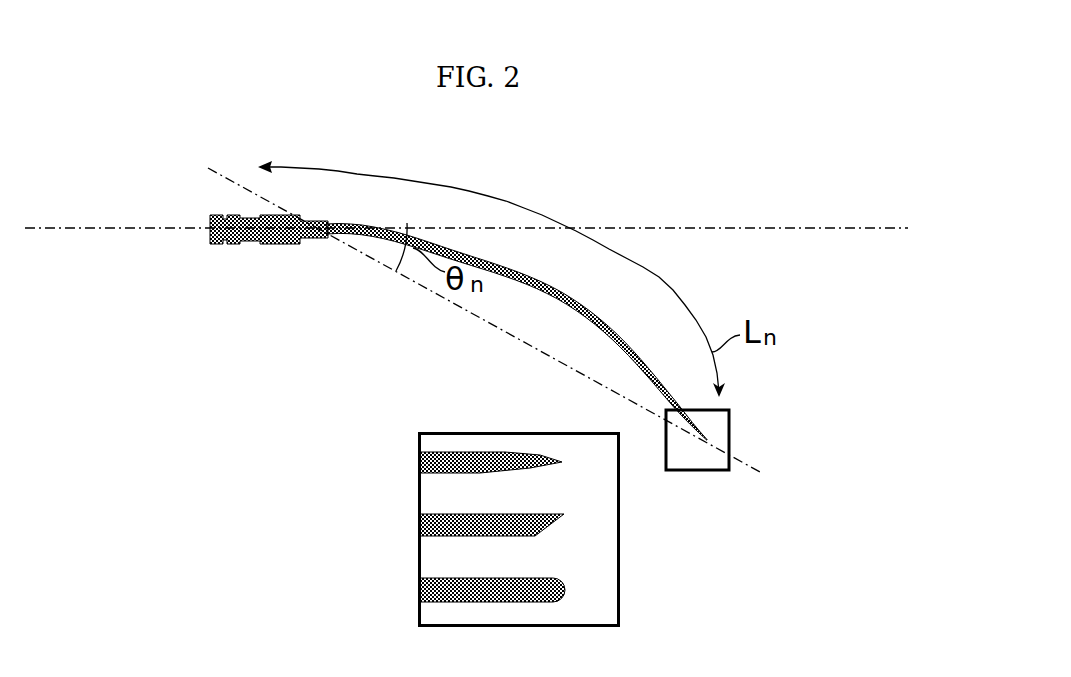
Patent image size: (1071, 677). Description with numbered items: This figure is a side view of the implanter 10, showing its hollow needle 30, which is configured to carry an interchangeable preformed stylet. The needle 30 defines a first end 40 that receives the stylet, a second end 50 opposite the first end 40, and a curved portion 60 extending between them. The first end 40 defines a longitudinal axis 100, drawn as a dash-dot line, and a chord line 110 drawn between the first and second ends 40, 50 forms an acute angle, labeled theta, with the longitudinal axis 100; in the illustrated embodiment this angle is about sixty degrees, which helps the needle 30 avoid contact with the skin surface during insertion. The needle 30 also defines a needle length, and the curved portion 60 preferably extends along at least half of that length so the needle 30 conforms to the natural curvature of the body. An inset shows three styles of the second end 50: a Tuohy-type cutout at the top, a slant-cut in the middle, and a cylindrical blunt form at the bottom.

The implanter 10 is at (162, 417).
The hollow needle 30 is at (580, 188).
The first end 40 is at (292, 212).
The second end 50 is at (730, 408).
The curved portion 60 is at (541, 291).
The longitudinal axis 100 is at (640, 228).
The chord line 110 is at (222, 178).